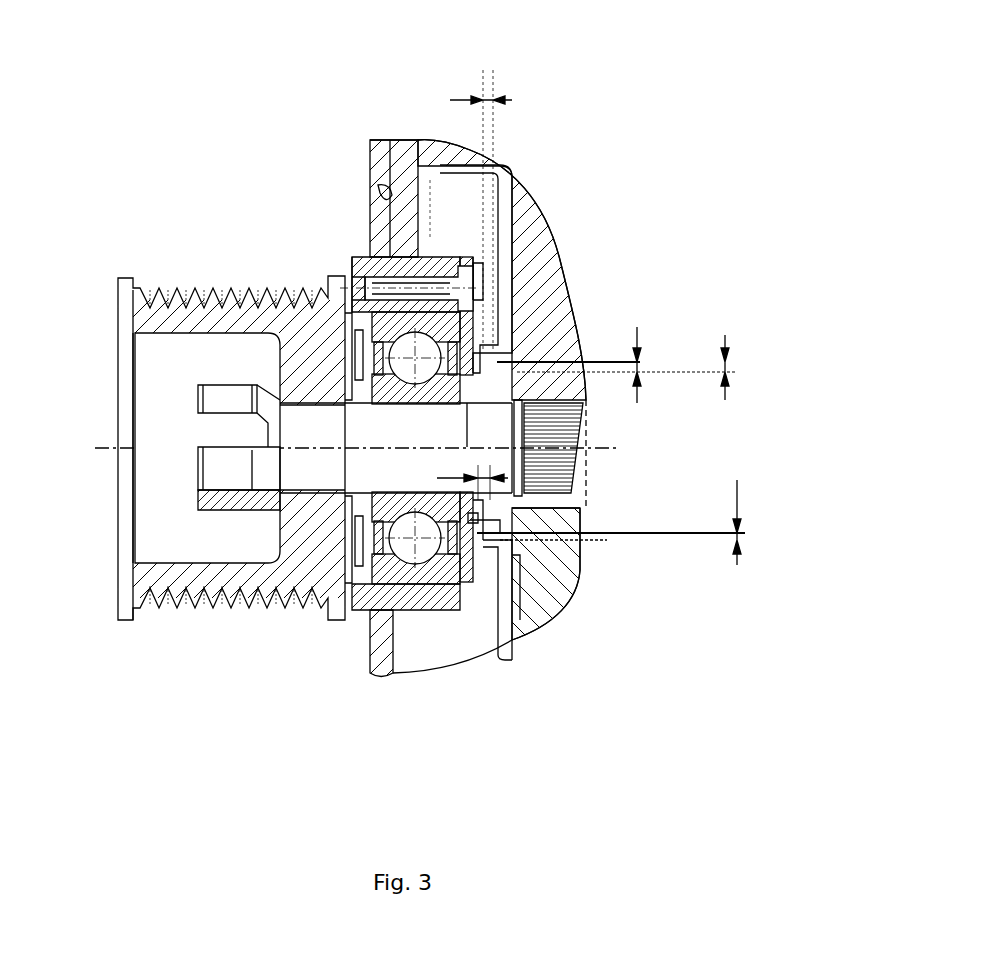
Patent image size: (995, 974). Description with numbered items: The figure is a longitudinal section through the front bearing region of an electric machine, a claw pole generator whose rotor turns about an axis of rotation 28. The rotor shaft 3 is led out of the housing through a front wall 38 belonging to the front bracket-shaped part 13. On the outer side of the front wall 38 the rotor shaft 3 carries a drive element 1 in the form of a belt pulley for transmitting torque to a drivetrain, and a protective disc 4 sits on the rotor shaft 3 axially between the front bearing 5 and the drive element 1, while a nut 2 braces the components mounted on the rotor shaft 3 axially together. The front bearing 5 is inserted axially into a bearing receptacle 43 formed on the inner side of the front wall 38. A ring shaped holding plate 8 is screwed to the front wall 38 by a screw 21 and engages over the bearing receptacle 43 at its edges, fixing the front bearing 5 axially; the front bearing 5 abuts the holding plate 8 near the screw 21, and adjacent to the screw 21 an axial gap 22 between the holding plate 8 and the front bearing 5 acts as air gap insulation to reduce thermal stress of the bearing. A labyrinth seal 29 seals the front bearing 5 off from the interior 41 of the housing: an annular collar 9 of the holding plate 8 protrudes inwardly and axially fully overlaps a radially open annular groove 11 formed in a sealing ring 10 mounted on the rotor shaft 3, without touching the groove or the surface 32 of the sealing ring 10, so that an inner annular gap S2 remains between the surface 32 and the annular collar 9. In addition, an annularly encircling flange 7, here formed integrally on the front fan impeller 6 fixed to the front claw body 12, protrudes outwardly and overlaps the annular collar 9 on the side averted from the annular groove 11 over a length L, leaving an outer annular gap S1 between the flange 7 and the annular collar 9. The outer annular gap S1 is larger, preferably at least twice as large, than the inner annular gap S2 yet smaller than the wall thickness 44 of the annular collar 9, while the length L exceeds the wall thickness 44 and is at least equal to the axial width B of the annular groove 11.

The drive element 1 is at (217, 608).
The nut 2 is at (227, 512).
The rotor shaft 3 is at (240, 440).
The protective disc 4 is at (233, 410).
The front bearing 5 is at (355, 262).
The front fan impeller 6 is at (505, 180).
The flange 7 is at (505, 332).
The holding plate 8 is at (540, 250).
The annular collar 9 is at (480, 355).
The sealing ring 10 is at (520, 537).
The annular groove 11 is at (523, 523).
The front claw body 12 is at (600, 408).
The front bracket-shaped part 13 is at (420, 235).
The screw 21 is at (405, 180).
The axial gap 22 is at (515, 590).
The axis of rotation 28 is at (105, 448).
The labyrinth seal 29 is at (520, 300).
The surface 32 is at (520, 535).
The front wall 38 is at (400, 150).
The interior 41 is at (474, 228).
The bearing receptacle 43 is at (432, 600).
The wall thickness 44 is at (643, 363).
The length L is at (489, 95).
The axial width B is at (488, 470).
The outer annular gap S1 is at (737, 500).
The inner annular gap S2 is at (725, 402).